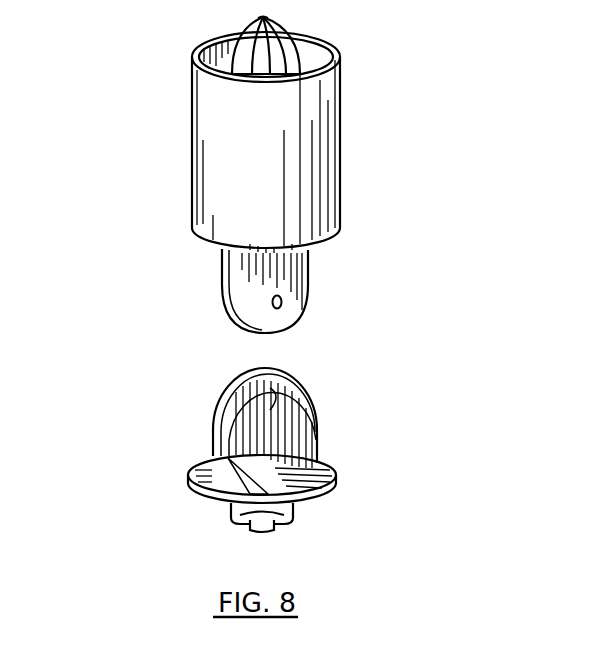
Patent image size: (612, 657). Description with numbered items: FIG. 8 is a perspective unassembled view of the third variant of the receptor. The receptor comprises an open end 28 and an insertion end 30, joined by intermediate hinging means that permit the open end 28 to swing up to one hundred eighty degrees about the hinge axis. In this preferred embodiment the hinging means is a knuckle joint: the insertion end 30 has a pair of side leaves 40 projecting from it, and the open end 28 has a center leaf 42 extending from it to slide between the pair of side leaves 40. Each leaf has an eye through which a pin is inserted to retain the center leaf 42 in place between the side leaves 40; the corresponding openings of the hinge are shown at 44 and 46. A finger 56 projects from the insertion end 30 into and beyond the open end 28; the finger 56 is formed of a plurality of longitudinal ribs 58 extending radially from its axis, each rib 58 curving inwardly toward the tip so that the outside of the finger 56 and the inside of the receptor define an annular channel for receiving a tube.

The open end 28 is at (318, 96).
The insertion end 30 is at (333, 459).
The side leaves 40 is at (250, 362).
The center leaf 42 is at (237, 270).
The slot 44 is at (277, 398).
The hole 46 is at (282, 300).
The finger 56 is at (256, 18).
The longitudinal ribs 58 is at (283, 45).